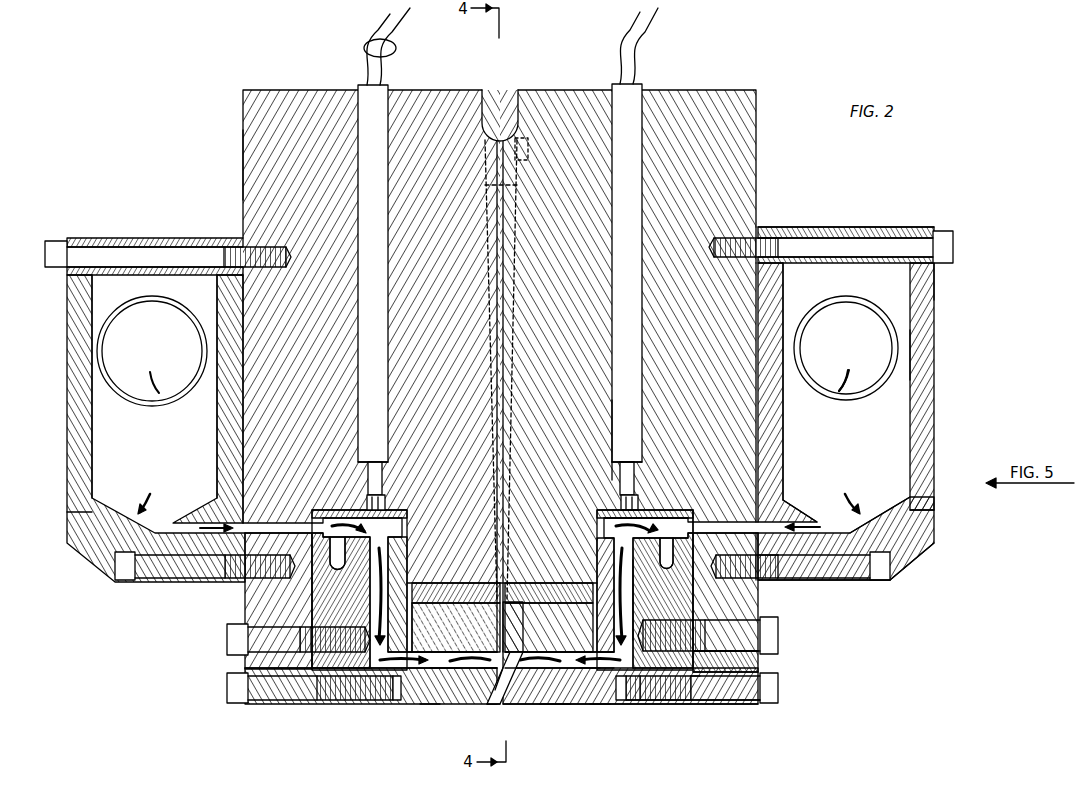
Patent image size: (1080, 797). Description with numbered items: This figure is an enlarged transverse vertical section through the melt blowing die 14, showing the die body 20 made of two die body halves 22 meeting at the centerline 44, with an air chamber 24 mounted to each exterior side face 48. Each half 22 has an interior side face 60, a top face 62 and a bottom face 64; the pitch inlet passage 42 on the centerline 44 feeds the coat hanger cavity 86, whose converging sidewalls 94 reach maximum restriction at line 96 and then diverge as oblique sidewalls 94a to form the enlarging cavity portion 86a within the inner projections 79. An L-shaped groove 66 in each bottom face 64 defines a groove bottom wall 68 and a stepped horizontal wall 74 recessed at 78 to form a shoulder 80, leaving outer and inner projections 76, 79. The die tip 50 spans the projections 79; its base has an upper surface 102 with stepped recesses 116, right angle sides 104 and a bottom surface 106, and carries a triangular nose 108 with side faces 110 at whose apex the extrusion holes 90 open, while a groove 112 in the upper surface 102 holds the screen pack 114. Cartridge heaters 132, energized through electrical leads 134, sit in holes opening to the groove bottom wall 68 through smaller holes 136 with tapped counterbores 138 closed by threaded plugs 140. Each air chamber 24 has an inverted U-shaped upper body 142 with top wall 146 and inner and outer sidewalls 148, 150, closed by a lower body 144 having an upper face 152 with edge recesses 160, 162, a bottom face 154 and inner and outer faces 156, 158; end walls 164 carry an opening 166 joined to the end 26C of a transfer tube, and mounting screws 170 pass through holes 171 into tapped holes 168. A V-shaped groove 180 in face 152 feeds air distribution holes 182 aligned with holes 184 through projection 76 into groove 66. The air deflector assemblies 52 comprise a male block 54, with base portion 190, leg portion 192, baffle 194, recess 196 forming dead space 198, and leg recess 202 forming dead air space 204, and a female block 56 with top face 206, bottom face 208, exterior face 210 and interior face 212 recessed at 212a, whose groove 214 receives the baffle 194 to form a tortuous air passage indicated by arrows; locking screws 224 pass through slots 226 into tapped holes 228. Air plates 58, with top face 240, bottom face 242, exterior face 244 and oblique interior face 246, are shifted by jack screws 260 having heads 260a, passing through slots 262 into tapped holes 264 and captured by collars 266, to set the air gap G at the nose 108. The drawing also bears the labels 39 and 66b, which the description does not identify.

The melt blowing die 14 is at (866, 220).
The die body 20 is at (757, 172).
The die body halves 22 is at (254, 134).
The air chambers 24 is at (142, 240).
The end of transfer tube 26C is at (886, 338).
The probe 39 is at (640, 100).
The pitch inlet passage 42 is at (498, 102).
The centerline 44 is at (505, 322).
The exterior side faces 48 is at (243, 190).
The die tip 50 is at (562, 672).
The air deflector assemblies 52 is at (420, 522).
The male air deflector block 54 is at (430, 562).
The female air deflector block 56 is at (262, 602).
The air plates 58 is at (386, 704).
The interior side face 60 is at (497, 252).
The top face 62 is at (406, 90).
The bottom face 64 is at (722, 706).
The L-shaped groove 66 is at (686, 540).
The channel 66b is at (582, 652).
The groove bottom wall 68 is at (673, 520).
The stepped horizontal wall 74 is at (560, 620).
The outer projection 76 is at (236, 635).
The recess 78 is at (455, 590).
The inner projection 79 is at (482, 442).
The shoulder 80 is at (590, 580).
The coat hanger cavity 86 is at (521, 150).
The enlarging cavity portion 86a is at (545, 545).
The extrusion holes 90 is at (516, 635).
The cavity sidewalls 94 is at (488, 190).
The oblique sidewalls 94a is at (535, 565).
The line of maximum restriction 96 is at (531, 520).
The upper surface of die tip base 102 is at (420, 582).
The right angle sides of die tip base 104 is at (415, 622).
The bottom surface of die tip base 106 is at (442, 690).
The die tip nose 108 is at (512, 715).
The nose side faces 110 is at (510, 641).
The screen pack groove 112 is at (527, 580).
The screen pack 114 is at (525, 598).
The recesses 116 is at (418, 602).
The cartridge heaters 132 is at (355, 92).
The electrical leads 134 is at (366, 44).
The smaller diameter holes 136 is at (627, 460).
The tapped counterbore 138 is at (612, 472).
The threaded plug 140 is at (614, 456).
The upper body of air chamber 142 is at (912, 229).
The lower body of air chamber 144 is at (880, 596).
The top wall 146 is at (800, 226).
The inner sidewall 148 is at (782, 302).
The outer sidewall 150 is at (934, 300).
The upper face of lower body 152 is at (816, 490).
The bottom face of lower body 154 is at (845, 581).
The inner face of lower body 156 is at (700, 500).
The outer face of lower body 158 is at (934, 522).
The edge recess 160 is at (778, 465).
The edge recess 162 is at (870, 495).
The end walls 164 is at (841, 396).
The air inlet opening 166 is at (905, 362).
The tapped holes 168 is at (760, 240).
The mounting screws 170 is at (941, 246).
The mounting screw holes 171 is at (794, 572).
The V-shaped groove 180 is at (858, 500).
The air distribution holes 182 is at (840, 516).
The air distribution holes 184 is at (690, 515).
The base portion 190 is at (358, 512).
The leg portion 192 is at (404, 556).
The strip projection 194 is at (332, 530).
The shallow recess 196 is at (622, 530).
The dead space 198 is at (347, 500).
The leg recess 202 is at (408, 540).
The dead air space 204 is at (406, 642).
The top face of female block 206 is at (650, 570).
The bottom face of female block 208 is at (592, 706).
The exterior side face of female block 210 is at (702, 562).
The interior side face of female block 212 is at (598, 690).
The side face recess 212a is at (644, 603).
The groove 214 is at (359, 590).
The locking screws 224 is at (742, 661).
The oval slots 226 is at (748, 642).
The tapped holes 228 is at (650, 630).
The top face of air plate 240 is at (432, 705).
The bottom face of air plate 242 is at (338, 704).
The exterior side face of air plate 244 is at (296, 704).
The oblique interior side face 246 is at (484, 702).
The jack screws 260 is at (762, 690).
The jack screw heads 260a is at (748, 692).
The jack screw slots 262 is at (735, 702).
The tapped holes 264 is at (668, 686).
The collar 266 is at (694, 704).
The air gap G is at (503, 703).